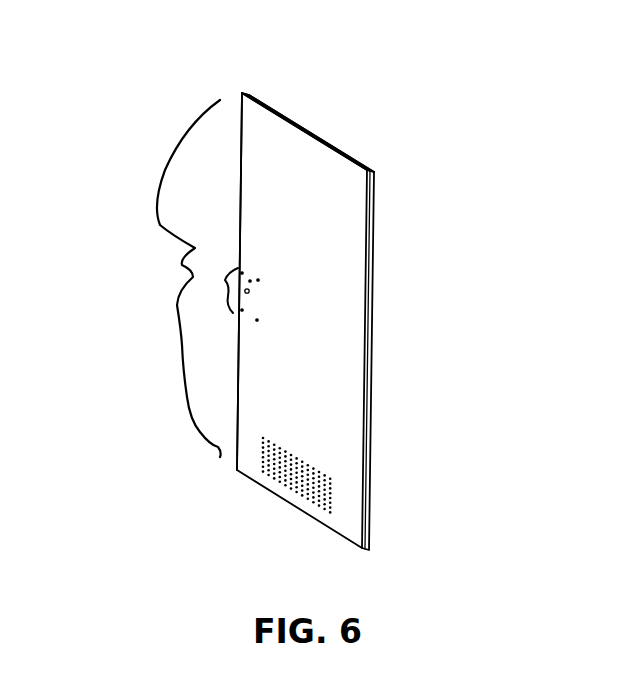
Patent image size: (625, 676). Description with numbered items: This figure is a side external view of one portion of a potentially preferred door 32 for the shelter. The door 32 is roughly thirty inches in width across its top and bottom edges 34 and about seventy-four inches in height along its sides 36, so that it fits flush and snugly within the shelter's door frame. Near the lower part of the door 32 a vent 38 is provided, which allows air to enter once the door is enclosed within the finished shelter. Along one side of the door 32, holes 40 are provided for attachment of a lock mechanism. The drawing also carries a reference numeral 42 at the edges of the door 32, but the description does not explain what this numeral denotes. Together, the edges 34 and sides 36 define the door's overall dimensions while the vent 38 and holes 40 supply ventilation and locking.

The door 32 is at (337, 273).
The top and bottom edges 34 is at (390, 130).
The sides 36 is at (154, 278).
The vent 38 is at (283, 473).
The holes 40 is at (222, 296).
The side edge of panel 42 is at (255, 125).